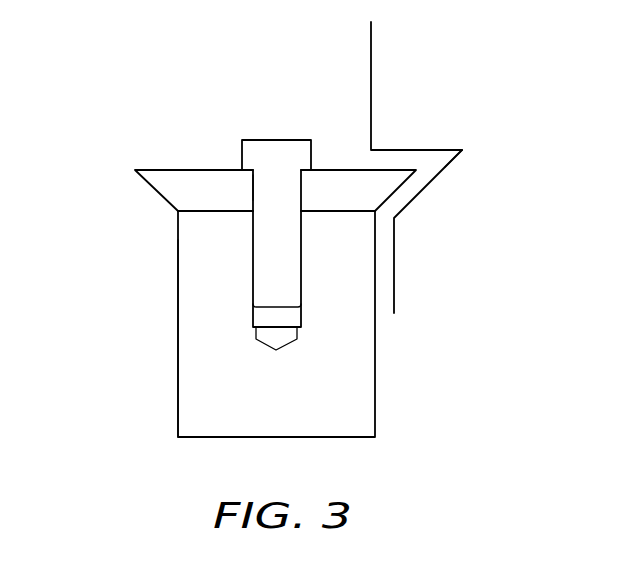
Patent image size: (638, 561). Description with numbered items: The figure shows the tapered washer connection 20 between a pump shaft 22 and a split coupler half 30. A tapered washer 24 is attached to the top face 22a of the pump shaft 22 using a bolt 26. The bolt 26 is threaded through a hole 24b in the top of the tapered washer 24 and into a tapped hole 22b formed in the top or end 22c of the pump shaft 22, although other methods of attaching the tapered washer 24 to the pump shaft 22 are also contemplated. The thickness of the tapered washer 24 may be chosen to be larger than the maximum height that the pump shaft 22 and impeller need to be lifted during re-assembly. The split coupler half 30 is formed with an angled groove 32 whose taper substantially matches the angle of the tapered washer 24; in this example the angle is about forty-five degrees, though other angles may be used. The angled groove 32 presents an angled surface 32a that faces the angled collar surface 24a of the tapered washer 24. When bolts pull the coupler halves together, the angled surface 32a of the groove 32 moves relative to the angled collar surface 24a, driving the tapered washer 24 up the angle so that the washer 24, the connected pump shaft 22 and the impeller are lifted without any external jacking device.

The tapered washer connection 20 is at (65, 140).
The pump shaft 22 is at (375, 271).
The top face 22a is at (212, 213).
The tapped hole 22b is at (300, 315).
The top or end 22c is at (178, 318).
The tapered washer 24 is at (230, 168).
The angled collar surface 24a is at (400, 190).
The hole 24b is at (251, 188).
The bolt 26 is at (275, 140).
The split coupler half 30 is at (371, 40).
The angled groove 32 is at (420, 179).
The angled surface 32a is at (442, 156).